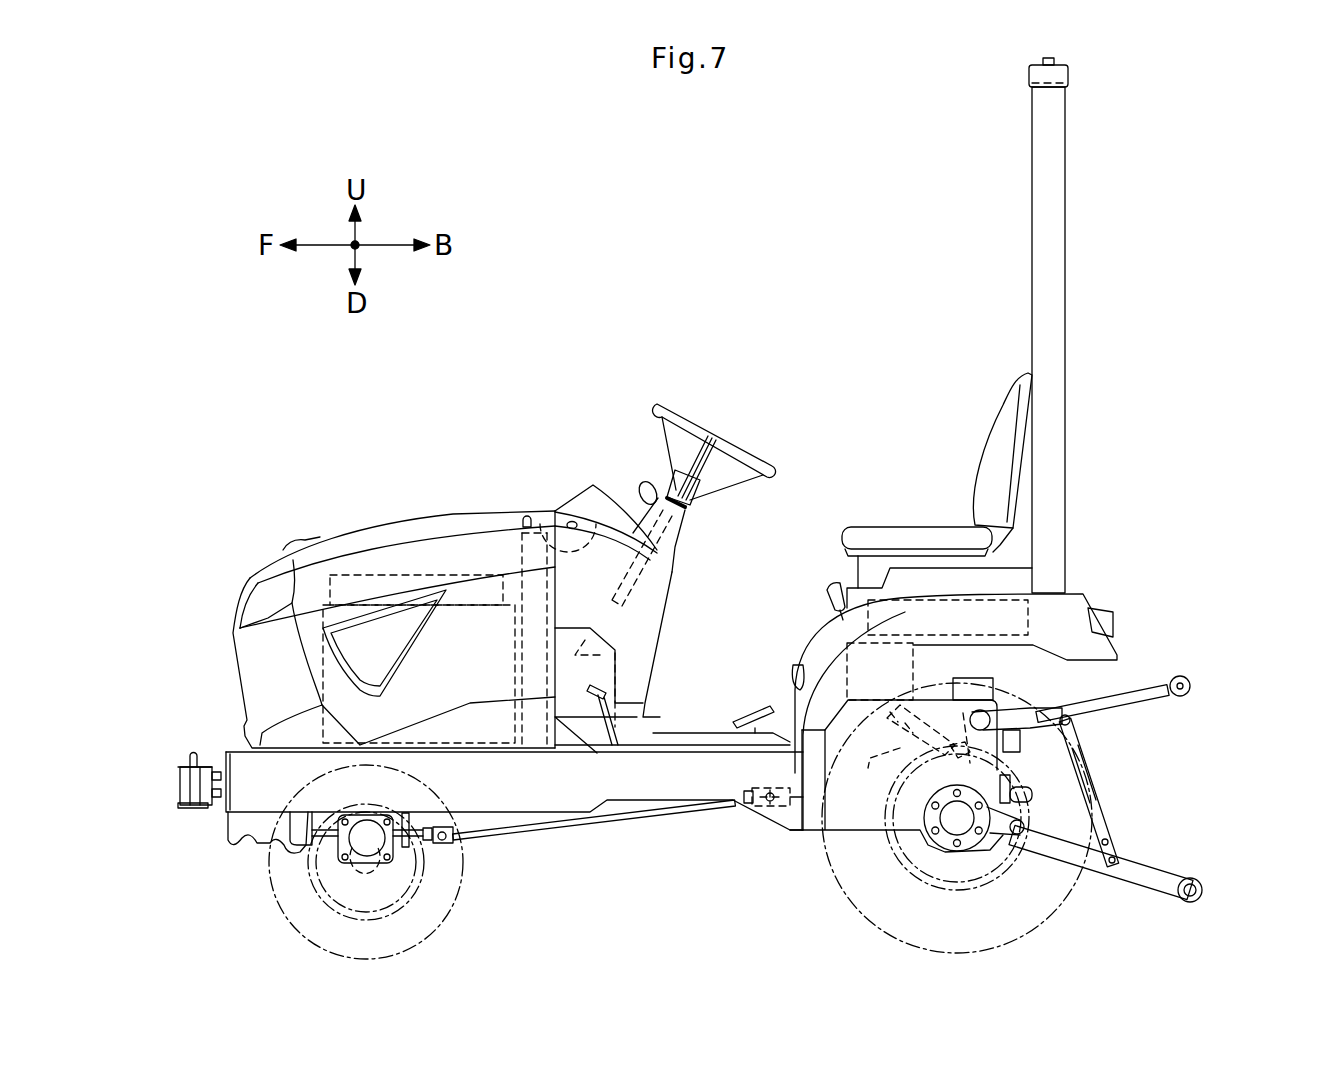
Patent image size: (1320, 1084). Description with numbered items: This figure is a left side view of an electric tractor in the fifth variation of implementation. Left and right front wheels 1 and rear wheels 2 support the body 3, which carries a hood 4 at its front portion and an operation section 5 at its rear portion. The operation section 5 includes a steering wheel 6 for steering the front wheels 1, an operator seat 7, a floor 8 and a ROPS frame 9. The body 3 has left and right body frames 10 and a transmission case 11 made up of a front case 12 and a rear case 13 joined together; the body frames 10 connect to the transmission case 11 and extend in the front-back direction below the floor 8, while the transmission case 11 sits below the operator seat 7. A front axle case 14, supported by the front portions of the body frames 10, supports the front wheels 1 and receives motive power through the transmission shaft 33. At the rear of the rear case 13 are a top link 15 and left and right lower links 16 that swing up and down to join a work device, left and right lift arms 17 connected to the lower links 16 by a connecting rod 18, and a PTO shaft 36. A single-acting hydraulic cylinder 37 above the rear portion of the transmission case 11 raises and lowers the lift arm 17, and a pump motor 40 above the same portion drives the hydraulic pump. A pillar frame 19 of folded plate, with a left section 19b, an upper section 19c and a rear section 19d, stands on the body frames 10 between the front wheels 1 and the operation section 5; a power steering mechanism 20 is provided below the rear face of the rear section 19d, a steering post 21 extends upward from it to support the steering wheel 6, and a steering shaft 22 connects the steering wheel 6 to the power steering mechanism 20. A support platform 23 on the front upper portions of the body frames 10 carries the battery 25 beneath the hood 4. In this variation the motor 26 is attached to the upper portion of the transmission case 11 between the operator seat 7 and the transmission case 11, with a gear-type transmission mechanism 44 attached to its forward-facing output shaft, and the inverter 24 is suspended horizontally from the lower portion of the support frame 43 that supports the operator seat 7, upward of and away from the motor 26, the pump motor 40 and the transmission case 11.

The front wheels 1 is at (296, 922).
The rear wheels 2 is at (1050, 890).
The body 3 is at (602, 830).
The hood 4 is at (328, 538).
The operation section 5 is at (812, 425).
The steering wheel 6 is at (695, 405).
The operator seat 7 is at (908, 527).
The floor 8 is at (690, 733).
The ROPS frame 9 is at (1065, 253).
The body frames 10 is at (263, 797).
The transmission case 11 is at (866, 827).
The front case 12 is at (803, 832).
The rear case 13 is at (833, 838).
The front axle case 14 is at (373, 850).
The top link 15 is at (1150, 682).
The lower links 16 is at (1160, 870).
The lift arms 17 is at (1010, 715).
The connecting rod 18 is at (1110, 802).
The pillar frame 19 is at (517, 542).
The left section 19b is at (472, 548).
The upper section 19c is at (543, 517).
The rear section 19d is at (577, 547).
The power steering mechanism 20 is at (660, 648).
The steering post 21 is at (663, 590).
The steering shaft 22 is at (676, 543).
The support platform 23 is at (303, 748).
The inverter 24 is at (1000, 600).
The battery 25 is at (397, 572).
The motor 26 is at (845, 645).
The transmission shaft 33 is at (680, 808).
The PTO shaft 36 is at (1030, 793).
The hydraulic cylinder 37 is at (909, 750).
The pump motor 40 is at (975, 683).
The support frame 43 is at (856, 575).
The transmission mechanism 44 is at (798, 650).